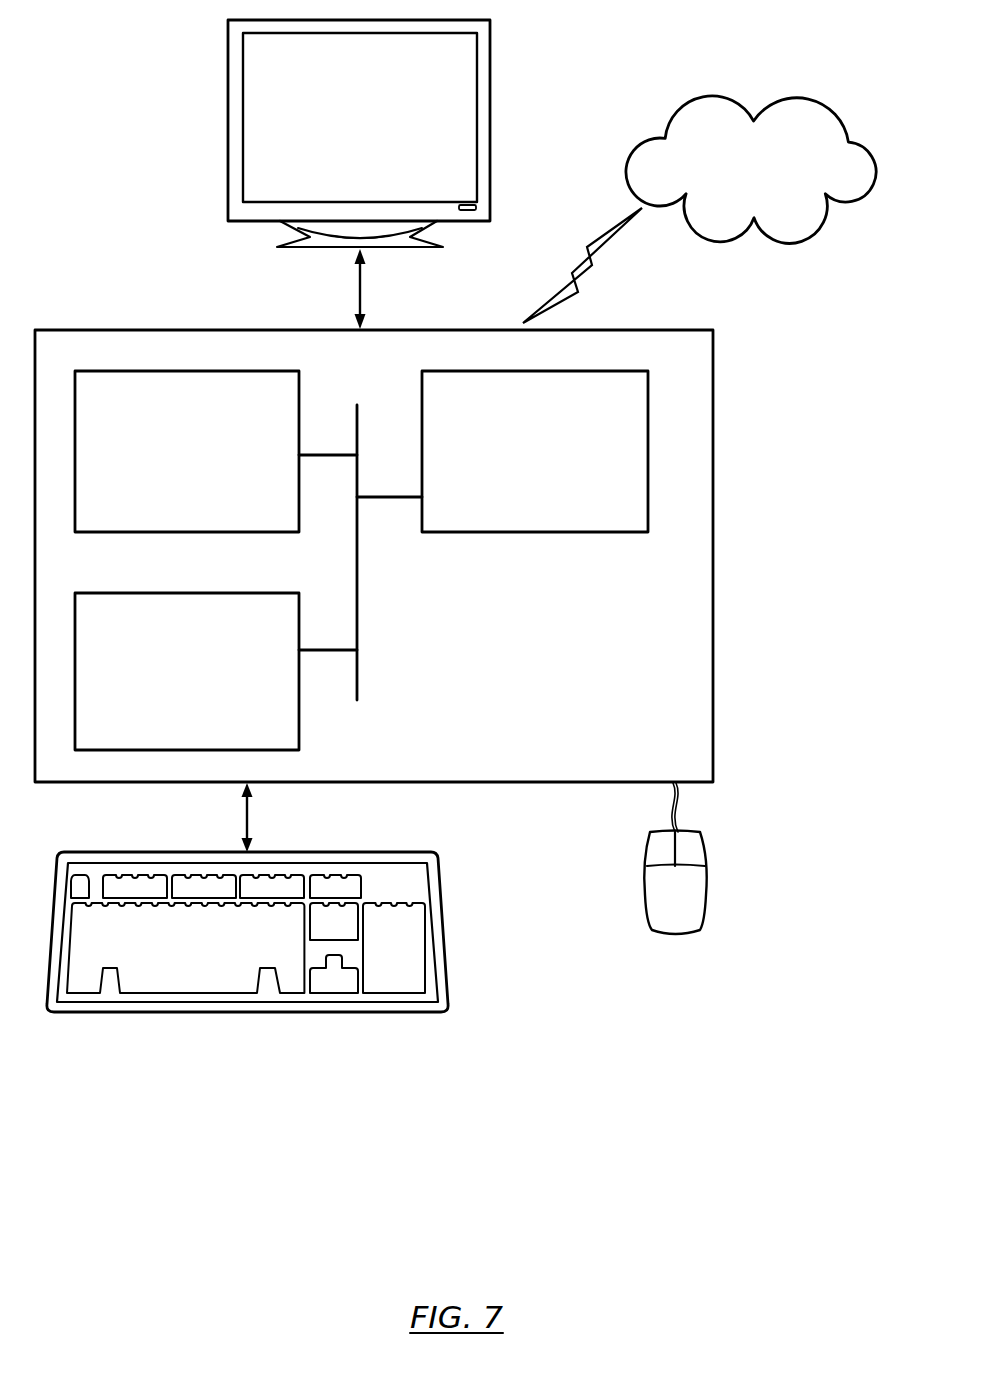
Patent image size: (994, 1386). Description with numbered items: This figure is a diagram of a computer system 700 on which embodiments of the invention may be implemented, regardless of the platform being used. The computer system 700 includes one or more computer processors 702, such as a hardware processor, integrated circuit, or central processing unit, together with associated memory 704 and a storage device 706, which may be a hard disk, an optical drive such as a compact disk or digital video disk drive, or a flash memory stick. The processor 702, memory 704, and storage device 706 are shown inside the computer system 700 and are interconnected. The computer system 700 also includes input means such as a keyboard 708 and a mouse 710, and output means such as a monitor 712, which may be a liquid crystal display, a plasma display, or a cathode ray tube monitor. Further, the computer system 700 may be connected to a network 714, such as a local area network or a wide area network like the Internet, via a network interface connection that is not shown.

The computer system 700 is at (771, 334).
The computer processor 702 is at (513, 434).
The memory 704 is at (165, 450).
The storage device 706 is at (165, 668).
The keyboard 708 is at (165, 946).
The mouse 710 is at (713, 943).
The monitor 712 is at (332, 130).
The network 714 is at (732, 172).